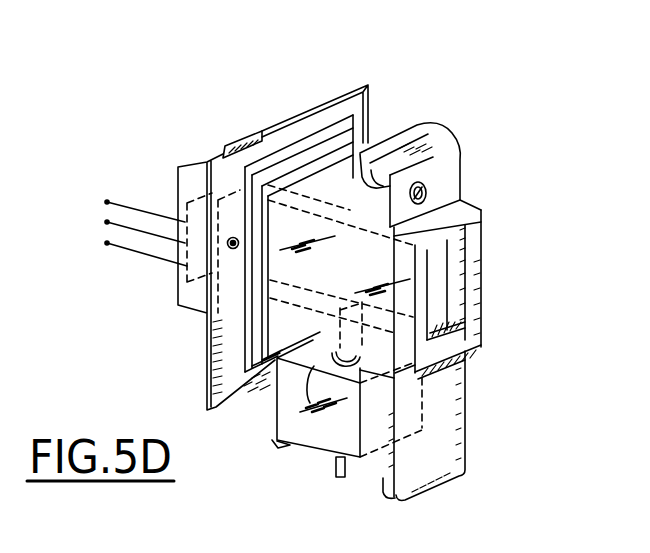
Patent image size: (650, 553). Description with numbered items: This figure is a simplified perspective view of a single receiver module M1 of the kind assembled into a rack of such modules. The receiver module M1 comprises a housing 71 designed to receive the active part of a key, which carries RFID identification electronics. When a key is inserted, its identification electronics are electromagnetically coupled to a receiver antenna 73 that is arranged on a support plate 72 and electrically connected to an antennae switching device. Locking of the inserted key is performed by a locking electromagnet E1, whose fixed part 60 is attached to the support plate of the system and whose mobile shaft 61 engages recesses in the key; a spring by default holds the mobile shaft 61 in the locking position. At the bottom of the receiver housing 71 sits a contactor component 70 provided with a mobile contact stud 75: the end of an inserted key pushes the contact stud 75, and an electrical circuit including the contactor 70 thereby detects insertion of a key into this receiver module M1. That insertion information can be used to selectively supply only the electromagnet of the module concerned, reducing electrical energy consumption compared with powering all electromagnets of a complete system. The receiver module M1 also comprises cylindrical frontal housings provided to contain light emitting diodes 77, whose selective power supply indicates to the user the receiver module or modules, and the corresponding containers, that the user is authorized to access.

The contactor component 70 is at (203, 284).
The housing 71 is at (447, 283).
The support plate 72 is at (338, 96).
The receiver antenna 73 is at (297, 124).
The mobile contact stud 75 is at (227, 243).
The light emitting diodes 77 is at (460, 181).
The fixed part 60 is at (324, 429).
The mobile shaft 61 is at (282, 409).
The receiver module M1 is at (236, 139).
The locking electromagnet E1 is at (275, 444).